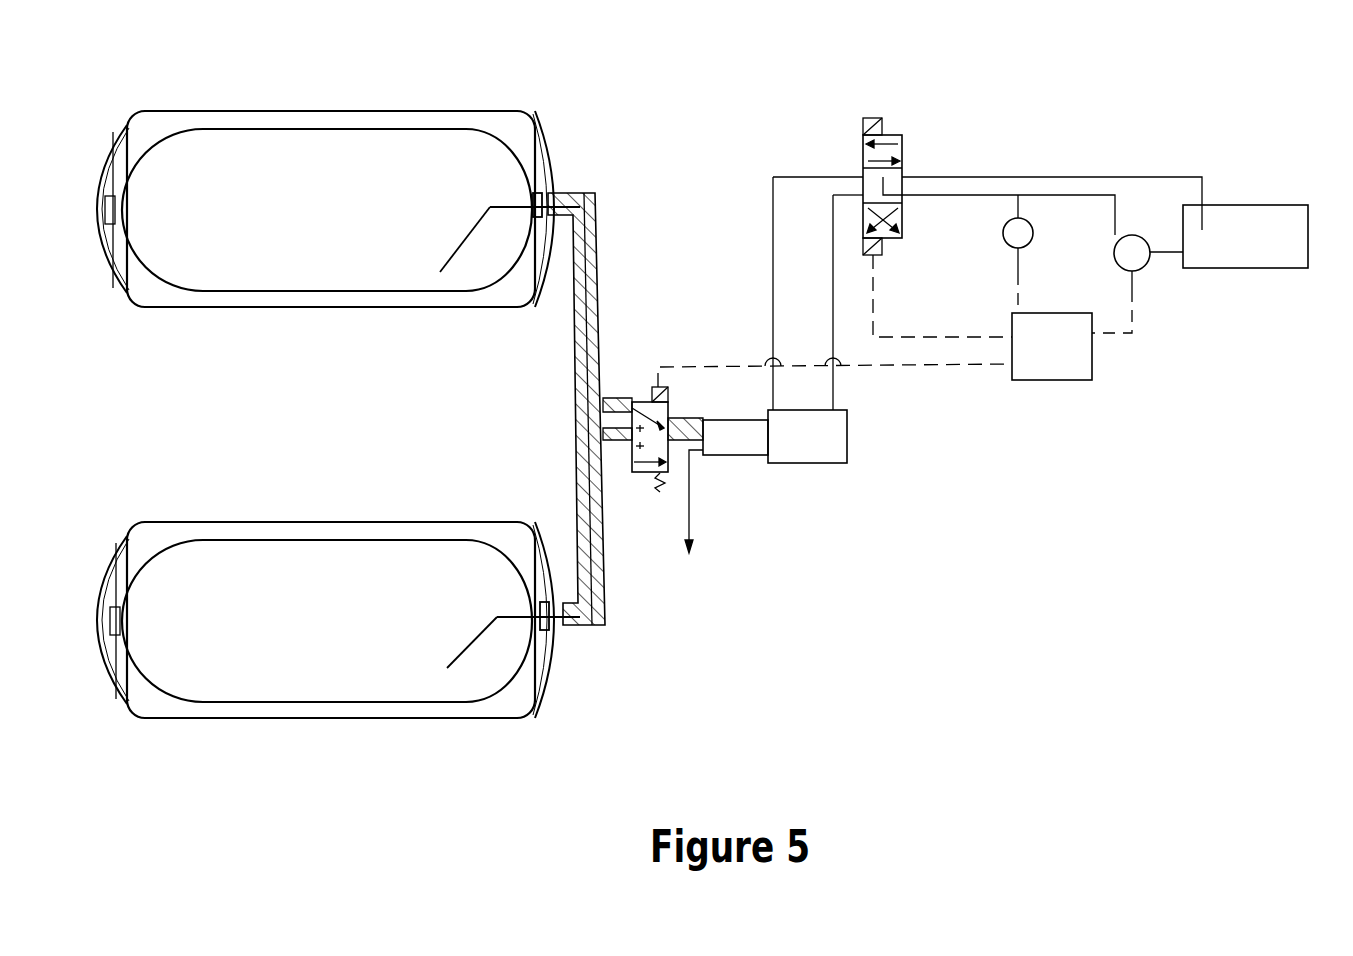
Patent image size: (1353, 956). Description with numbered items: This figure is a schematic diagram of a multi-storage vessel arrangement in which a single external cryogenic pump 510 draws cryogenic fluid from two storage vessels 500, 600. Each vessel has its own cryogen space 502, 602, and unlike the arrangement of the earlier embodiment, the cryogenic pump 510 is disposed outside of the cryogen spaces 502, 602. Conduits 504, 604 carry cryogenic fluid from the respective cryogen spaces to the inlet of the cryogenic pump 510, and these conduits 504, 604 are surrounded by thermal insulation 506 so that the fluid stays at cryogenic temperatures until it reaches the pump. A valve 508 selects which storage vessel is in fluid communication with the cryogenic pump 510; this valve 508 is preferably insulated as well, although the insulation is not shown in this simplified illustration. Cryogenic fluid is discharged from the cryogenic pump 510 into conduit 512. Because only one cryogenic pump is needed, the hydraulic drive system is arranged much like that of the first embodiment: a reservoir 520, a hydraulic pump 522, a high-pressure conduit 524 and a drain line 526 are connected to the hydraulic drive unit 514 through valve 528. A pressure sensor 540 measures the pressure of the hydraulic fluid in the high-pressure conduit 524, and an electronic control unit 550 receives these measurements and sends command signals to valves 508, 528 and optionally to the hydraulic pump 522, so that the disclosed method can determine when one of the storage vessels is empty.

The storage vessel 500 is at (270, 718).
The cryogen space 502 is at (323, 642).
The conduit 504 is at (515, 603).
The thermal insulation 506 is at (585, 455).
The valve 508 is at (653, 386).
The cryogenic pump 510 is at (727, 457).
The conduit 512 is at (690, 512).
The hydraulic drive unit 514 is at (787, 450).
The reservoir 520 is at (1218, 255).
The hydraulic pump 522 is at (1132, 260).
The high-pressure conduit 524 is at (963, 193).
The drain line 526 is at (1163, 175).
The valve 528 is at (877, 120).
The pressure sensor 540 is at (1020, 230).
The electronic control unit 550 is at (1084, 371).
The storage vessel 600 is at (262, 308).
The cryogen space 602 is at (318, 237).
The conduit 604 is at (510, 200).